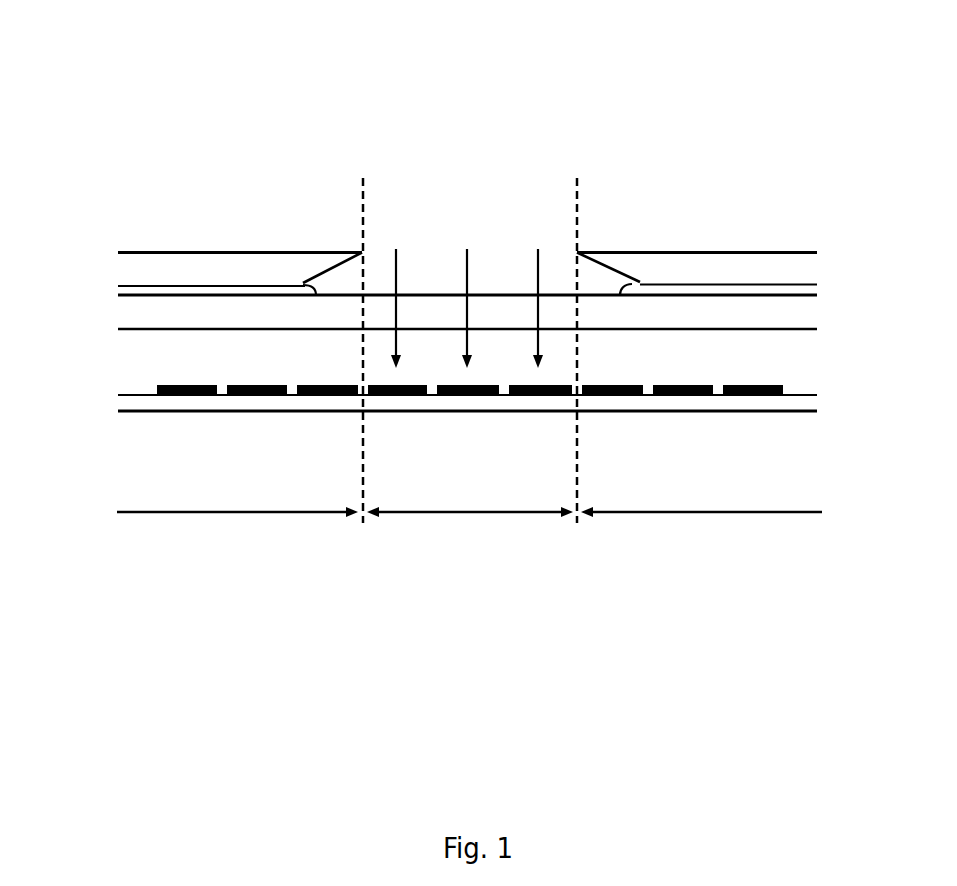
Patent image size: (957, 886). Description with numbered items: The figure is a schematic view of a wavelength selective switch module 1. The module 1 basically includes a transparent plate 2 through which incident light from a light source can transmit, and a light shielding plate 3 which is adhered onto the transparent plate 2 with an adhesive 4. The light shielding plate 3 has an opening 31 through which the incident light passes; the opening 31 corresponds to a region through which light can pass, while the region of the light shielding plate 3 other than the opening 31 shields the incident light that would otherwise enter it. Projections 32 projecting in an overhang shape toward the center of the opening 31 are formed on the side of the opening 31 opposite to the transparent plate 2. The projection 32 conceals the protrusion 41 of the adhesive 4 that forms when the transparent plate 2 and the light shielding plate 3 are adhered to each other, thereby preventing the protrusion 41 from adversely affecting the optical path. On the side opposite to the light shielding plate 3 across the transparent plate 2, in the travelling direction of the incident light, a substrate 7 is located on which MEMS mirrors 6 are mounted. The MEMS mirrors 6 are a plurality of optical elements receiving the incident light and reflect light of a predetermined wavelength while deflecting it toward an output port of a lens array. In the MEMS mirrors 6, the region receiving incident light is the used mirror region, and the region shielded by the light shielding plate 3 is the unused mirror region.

The wavelength selective switch module 1 is at (244, 118).
The transparent plate 2 is at (137, 315).
The light shielding plate 3 is at (185, 262).
The opening 31 is at (548, 252).
The projection 32 is at (335, 258).
The adhesive 4 is at (118, 290).
The protrusion 41 is at (303, 283).
The MEMS mirrors 6 is at (205, 385).
The substrate 7 is at (130, 404).